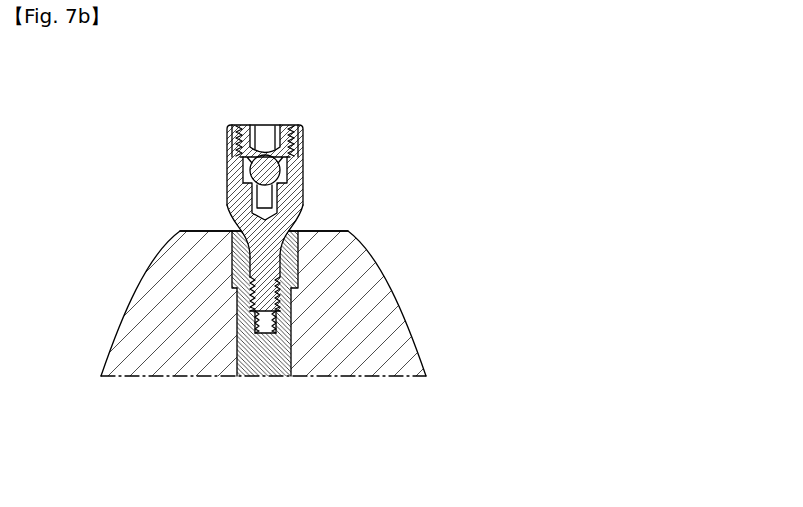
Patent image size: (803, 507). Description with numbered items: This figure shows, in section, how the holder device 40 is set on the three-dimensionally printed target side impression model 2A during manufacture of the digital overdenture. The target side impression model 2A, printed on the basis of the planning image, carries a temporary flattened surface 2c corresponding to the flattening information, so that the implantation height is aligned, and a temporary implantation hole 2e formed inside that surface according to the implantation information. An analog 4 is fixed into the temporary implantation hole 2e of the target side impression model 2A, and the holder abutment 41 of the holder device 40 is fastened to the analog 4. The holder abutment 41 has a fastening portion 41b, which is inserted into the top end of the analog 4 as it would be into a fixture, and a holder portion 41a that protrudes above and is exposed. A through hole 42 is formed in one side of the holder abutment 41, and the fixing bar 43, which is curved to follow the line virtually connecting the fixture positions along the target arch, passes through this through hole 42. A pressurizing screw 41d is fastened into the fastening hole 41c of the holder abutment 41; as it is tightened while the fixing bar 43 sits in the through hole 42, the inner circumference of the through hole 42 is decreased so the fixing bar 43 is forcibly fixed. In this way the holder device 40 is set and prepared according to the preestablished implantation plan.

The target side impression model 2A is at (293, 293).
The temporary flattened surface 2c is at (323, 231).
The temporary implantation hole 2e is at (291, 323).
The analog 4 is at (281, 352).
The holder device 40 is at (253, 191).
The holder abutment 41 is at (231, 191).
The holder portion 41a is at (236, 172).
The fastening portion 41b is at (241, 236).
The fastening hole 41c is at (237, 229).
The pressurizing screw 41d is at (281, 126).
The through hole 42 is at (233, 160).
The fixing bar 43 is at (279, 172).